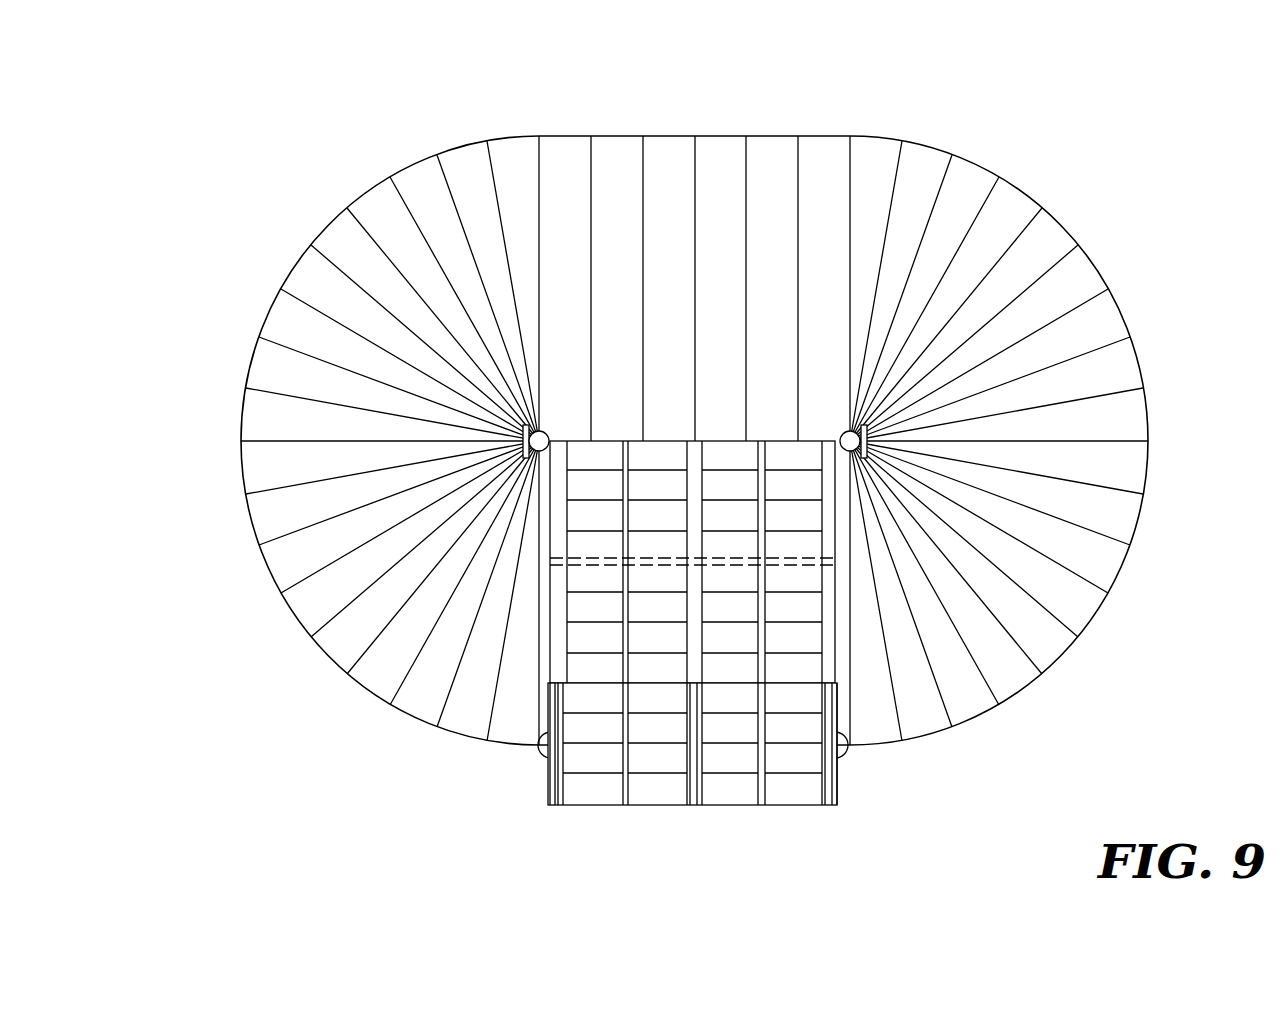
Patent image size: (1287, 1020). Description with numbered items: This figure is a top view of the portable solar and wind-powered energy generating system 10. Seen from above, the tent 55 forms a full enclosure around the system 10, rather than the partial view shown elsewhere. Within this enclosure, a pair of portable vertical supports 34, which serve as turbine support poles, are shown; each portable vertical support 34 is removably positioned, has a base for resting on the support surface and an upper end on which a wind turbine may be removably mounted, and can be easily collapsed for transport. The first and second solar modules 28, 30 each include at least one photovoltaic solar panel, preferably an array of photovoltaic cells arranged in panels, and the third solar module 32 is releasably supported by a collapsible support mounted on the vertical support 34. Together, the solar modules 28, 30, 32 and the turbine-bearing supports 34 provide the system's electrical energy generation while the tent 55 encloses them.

The portable solar and wind-powered energy generating system 10 is at (228, 96).
The first solar module 28 is at (548, 789).
The second solar module 30 is at (830, 663).
The third solar module 32 is at (735, 452).
The portable vertical support 34 is at (542, 430).
The tent 55 is at (1103, 283).